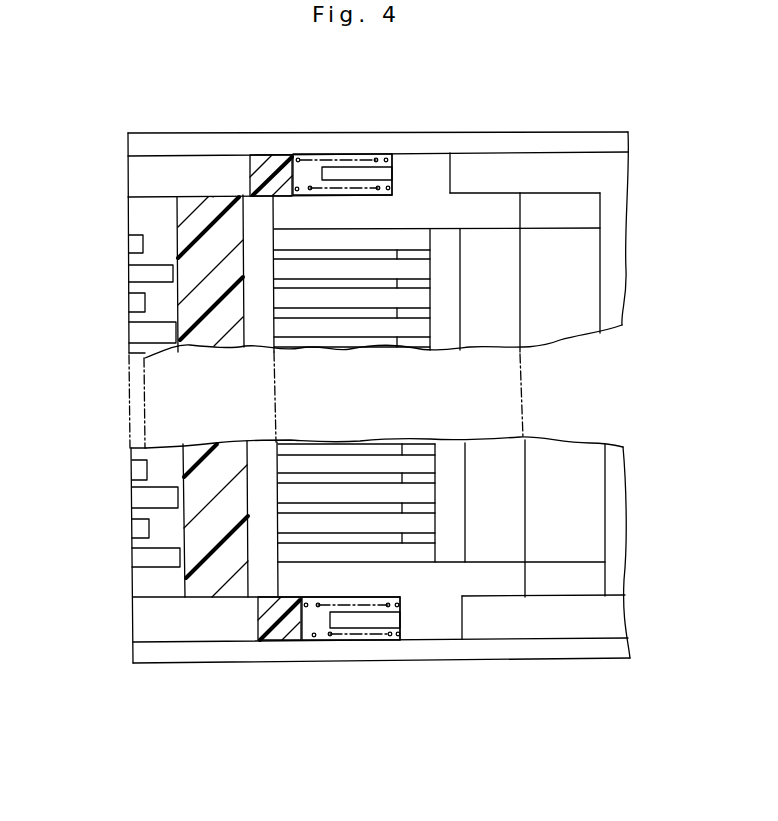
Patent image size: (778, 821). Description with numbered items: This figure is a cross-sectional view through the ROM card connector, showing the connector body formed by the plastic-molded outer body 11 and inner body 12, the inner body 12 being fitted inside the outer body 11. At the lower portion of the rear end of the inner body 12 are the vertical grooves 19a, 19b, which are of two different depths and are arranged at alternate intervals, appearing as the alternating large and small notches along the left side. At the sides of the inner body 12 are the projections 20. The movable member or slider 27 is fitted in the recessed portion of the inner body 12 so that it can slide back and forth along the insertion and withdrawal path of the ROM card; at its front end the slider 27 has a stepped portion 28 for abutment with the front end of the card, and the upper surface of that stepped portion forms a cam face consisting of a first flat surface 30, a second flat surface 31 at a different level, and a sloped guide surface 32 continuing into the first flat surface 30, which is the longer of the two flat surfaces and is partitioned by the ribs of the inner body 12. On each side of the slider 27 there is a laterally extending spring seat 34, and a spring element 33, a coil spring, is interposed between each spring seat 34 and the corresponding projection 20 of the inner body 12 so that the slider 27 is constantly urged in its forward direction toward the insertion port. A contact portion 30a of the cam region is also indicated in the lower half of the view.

The outer body 11 is at (622, 448).
The inner body 12 is at (212, 197).
The vertical groove 19a is at (134, 280).
The vertical groove 19b is at (135, 244).
The projection 20 is at (265, 155).
The movable member (slider) 27 is at (478, 190).
The stepped portion 28 is at (525, 517).
The first flat surface 30 is at (388, 292).
The contact portion 30a is at (380, 510).
The second flat surface 31 is at (495, 278).
The sloped guide surface 32 is at (445, 251).
The spring element 33 is at (358, 153).
The spring seat 34 is at (418, 162).